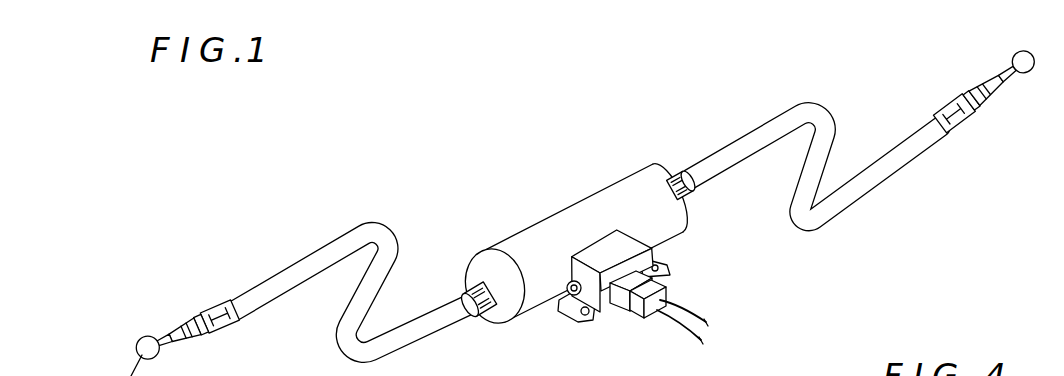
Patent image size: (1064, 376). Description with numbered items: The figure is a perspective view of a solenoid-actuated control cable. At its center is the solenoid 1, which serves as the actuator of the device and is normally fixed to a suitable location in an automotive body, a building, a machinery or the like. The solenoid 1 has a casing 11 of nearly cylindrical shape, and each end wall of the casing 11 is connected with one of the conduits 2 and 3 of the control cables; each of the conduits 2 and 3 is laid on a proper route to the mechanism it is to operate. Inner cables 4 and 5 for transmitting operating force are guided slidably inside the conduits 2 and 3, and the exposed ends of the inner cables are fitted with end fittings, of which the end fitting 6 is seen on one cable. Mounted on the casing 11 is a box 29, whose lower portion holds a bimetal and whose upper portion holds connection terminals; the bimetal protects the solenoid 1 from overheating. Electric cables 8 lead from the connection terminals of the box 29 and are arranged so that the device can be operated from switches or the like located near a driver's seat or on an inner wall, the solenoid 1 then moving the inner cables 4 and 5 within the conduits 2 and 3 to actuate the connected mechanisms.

The solenoid 1 is at (527, 212).
The conduit 2 is at (857, 200).
The conduit 3 is at (338, 240).
The inner cable 4 is at (1003, 85).
The inner cable 5 is at (163, 338).
The end fitting 6 is at (1026, 75).
The electric cable 8 is at (657, 325).
The casing 11 is at (653, 172).
The box 29 is at (650, 262).